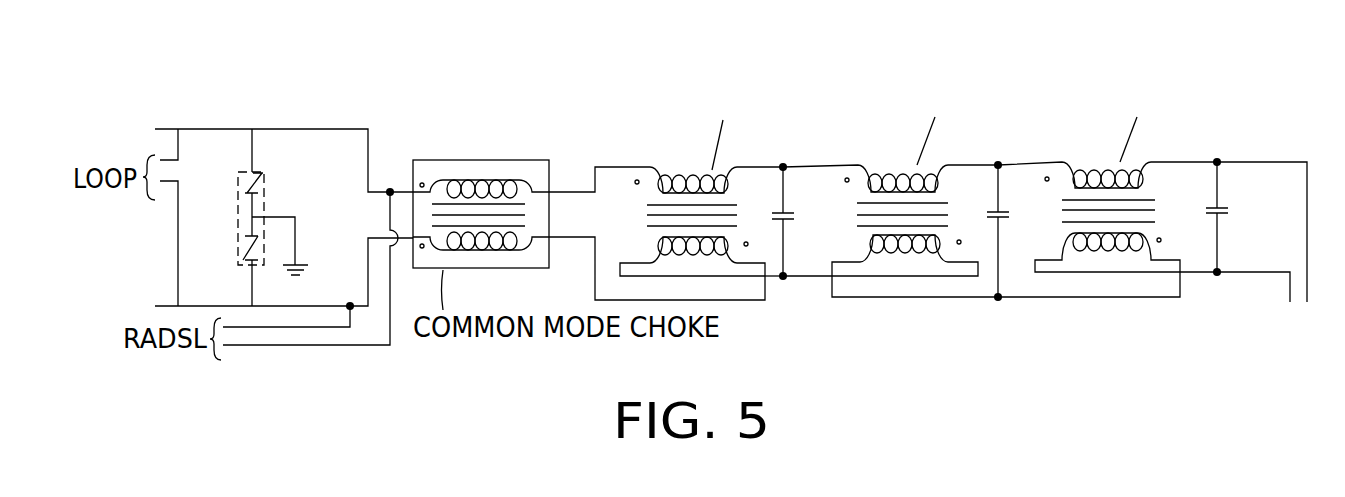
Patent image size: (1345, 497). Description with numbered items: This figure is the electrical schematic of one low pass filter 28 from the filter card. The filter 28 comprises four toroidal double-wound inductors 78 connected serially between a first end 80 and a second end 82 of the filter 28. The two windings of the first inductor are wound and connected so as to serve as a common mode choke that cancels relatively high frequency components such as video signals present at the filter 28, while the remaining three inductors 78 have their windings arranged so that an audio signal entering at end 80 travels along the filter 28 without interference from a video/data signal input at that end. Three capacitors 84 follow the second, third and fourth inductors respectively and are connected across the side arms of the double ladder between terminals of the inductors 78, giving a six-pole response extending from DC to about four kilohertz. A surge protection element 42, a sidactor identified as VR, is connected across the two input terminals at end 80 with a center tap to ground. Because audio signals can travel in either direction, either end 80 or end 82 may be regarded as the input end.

The first end 80 is at (284, 191).
The surge protection element 42 is at (265, 181).
The filter 28 is at (443, 142).
The toroidal double-wound inductors 78 is at (550, 167).
The capacitors 84 is at (1018, 229).
The second end 82 is at (1234, 160).